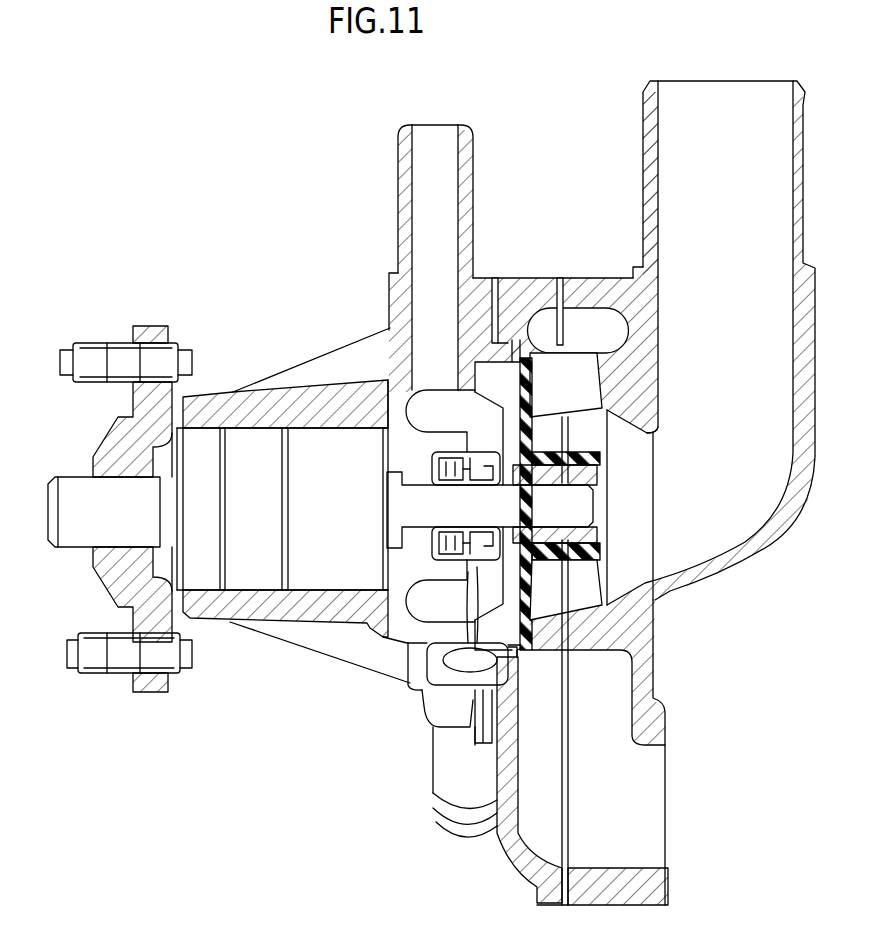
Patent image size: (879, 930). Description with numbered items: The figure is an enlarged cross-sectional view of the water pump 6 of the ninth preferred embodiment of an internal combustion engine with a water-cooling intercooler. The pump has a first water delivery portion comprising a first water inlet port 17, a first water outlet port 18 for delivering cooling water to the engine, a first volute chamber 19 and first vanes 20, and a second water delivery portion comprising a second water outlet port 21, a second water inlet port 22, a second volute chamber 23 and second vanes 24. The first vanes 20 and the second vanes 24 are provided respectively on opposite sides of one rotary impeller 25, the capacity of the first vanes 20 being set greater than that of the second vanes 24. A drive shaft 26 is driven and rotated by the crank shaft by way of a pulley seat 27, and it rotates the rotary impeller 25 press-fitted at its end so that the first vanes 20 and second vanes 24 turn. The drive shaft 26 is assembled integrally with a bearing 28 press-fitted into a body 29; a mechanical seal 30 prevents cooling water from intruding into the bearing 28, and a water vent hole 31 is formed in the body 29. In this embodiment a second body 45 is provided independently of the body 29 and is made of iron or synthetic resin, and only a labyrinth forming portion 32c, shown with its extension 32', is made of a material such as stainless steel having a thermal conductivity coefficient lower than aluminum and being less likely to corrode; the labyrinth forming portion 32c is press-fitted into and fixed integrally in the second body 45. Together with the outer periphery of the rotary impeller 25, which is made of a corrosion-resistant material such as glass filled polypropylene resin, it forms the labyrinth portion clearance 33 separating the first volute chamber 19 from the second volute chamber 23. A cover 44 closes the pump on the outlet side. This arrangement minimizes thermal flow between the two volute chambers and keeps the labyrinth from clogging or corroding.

The water pump 6 is at (229, 264).
The first water inlet port 17 is at (778, 153).
The first water outlet port 18 is at (652, 822).
The first volute chamber 19 is at (603, 332).
The first vanes 20 is at (567, 372).
The second water outlet port 21 is at (447, 177).
The second water inlet port 22 is at (445, 768).
The second volute chamber 23 is at (438, 686).
The second vanes 24 is at (492, 386).
The rotary impeller 25 is at (533, 372).
The drive shaft 26 is at (570, 510).
The pulley seat 27 is at (110, 565).
The bearing 28 is at (237, 578).
The body 29 is at (287, 603).
The mechanical seal 30 is at (433, 457).
The water vent hole 31 is at (413, 643).
The sleeve extension 32' is at (475, 739).
The labyrinth forming portion 32c is at (525, 658).
The labyrinth portion clearance 33 is at (524, 653).
The cover 44 is at (653, 722).
The second body 45 is at (508, 857).